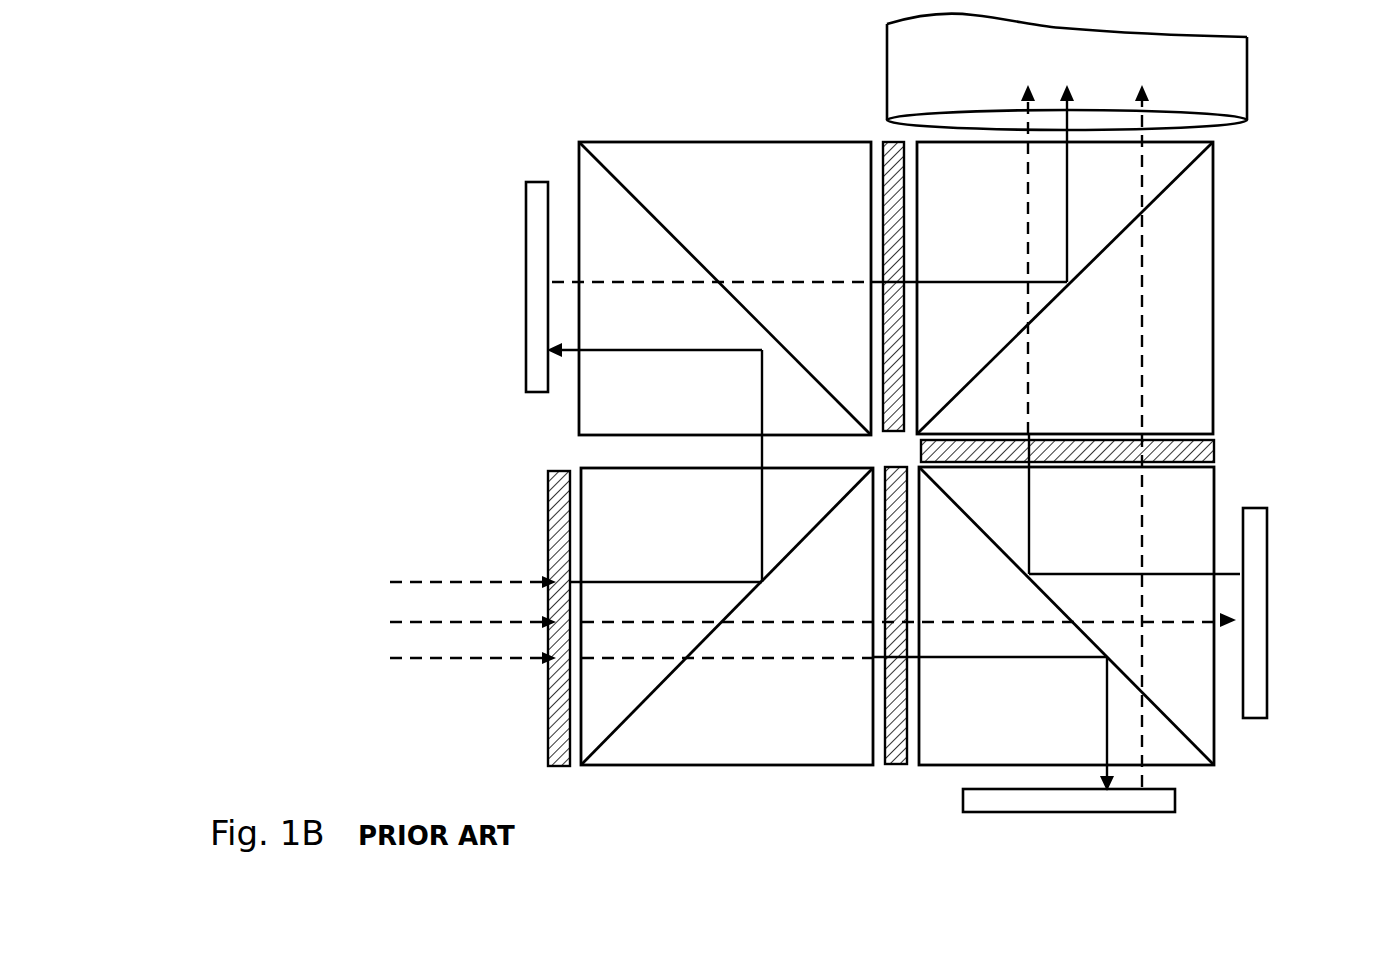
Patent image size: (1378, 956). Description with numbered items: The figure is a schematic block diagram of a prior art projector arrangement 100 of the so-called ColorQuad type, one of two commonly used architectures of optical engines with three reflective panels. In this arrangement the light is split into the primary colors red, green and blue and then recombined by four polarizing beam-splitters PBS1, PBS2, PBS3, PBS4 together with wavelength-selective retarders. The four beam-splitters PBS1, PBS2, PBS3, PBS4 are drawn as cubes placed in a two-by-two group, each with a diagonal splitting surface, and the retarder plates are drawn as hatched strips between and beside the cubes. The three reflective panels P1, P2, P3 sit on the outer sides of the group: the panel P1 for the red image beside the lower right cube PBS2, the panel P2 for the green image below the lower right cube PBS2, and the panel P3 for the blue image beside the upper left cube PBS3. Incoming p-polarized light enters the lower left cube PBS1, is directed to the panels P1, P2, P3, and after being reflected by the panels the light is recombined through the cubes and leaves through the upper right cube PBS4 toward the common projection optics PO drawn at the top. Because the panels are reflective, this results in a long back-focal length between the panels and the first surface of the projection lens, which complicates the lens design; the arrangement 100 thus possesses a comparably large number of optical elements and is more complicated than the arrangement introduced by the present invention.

The prior art projector arrangement 100 is at (447, 112).
The first polarizing beam splitter PBS1' PBS1 is at (772, 738).
The second polarizing beam splitter PBS2' PBS2 is at (1016, 599).
The third polarizing beam splitter PBS3' PBS3 is at (750, 191).
The fourth polarizing beam splitter PBS4' PBS4 is at (1124, 364).
The projection optics PO is at (1091, 69).
The panel P1 for red image Ir P1 is at (1252, 514).
The panel P2 for green image Ig P2 is at (1013, 797).
The panel P3 for blue image Ib P3 is at (537, 188).